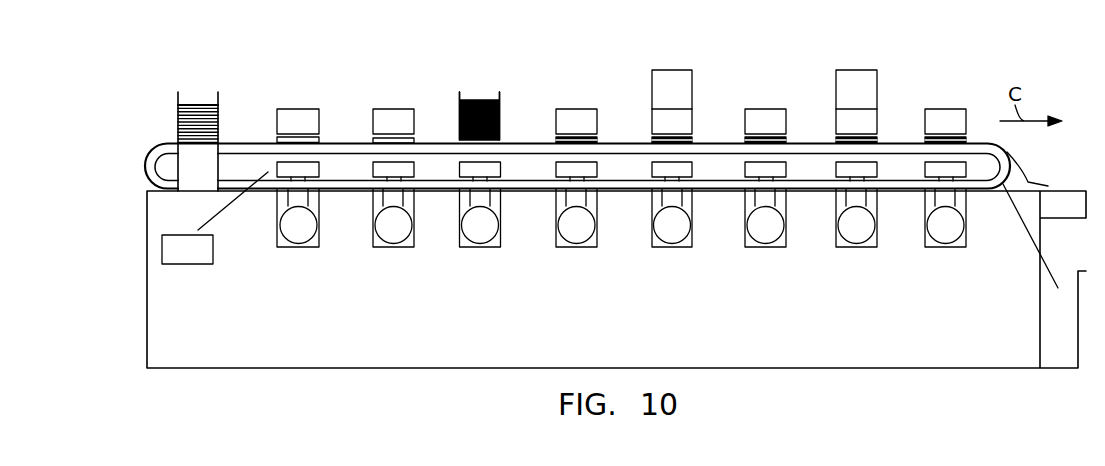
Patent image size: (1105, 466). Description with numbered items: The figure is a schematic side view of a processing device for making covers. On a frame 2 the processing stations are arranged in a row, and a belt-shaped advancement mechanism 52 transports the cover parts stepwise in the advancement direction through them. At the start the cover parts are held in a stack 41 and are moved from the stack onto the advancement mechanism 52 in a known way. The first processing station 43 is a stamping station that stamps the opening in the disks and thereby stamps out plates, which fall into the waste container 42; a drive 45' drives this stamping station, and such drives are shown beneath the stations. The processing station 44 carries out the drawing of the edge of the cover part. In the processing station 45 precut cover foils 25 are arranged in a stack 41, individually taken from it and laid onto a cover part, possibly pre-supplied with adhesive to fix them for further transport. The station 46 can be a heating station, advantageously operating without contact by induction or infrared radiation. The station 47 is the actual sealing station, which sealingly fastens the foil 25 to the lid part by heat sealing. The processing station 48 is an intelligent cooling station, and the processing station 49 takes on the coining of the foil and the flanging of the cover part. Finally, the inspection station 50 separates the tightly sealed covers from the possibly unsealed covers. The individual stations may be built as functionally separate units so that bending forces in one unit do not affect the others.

The frame 2 is at (332, 347).
The cover foil 25 is at (500, 117).
The stack 41 is at (197, 102).
The waste container 42 is at (190, 253).
The first processing station 43 is at (292, 118).
The processing station 44 is at (393, 118).
The processing station 45 is at (480, 94).
The drive 45' is at (632, 222).
The heating station 46 is at (573, 118).
The sealing station 47 is at (660, 122).
The cooling station 48 is at (767, 117).
The processing station 49 is at (847, 120).
The inspection station 50 is at (945, 118).
The advancement mechanism 52 is at (242, 147).